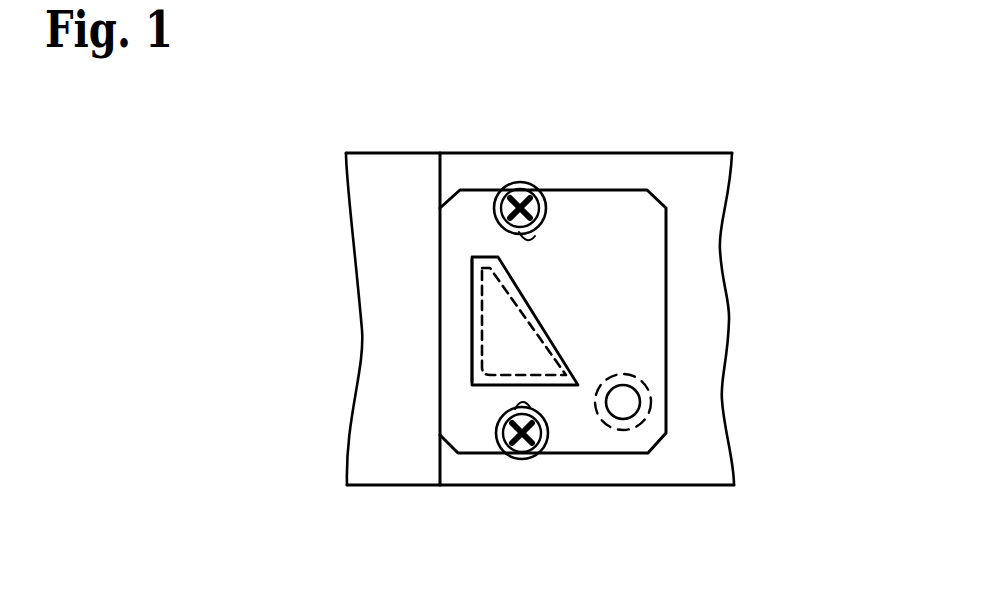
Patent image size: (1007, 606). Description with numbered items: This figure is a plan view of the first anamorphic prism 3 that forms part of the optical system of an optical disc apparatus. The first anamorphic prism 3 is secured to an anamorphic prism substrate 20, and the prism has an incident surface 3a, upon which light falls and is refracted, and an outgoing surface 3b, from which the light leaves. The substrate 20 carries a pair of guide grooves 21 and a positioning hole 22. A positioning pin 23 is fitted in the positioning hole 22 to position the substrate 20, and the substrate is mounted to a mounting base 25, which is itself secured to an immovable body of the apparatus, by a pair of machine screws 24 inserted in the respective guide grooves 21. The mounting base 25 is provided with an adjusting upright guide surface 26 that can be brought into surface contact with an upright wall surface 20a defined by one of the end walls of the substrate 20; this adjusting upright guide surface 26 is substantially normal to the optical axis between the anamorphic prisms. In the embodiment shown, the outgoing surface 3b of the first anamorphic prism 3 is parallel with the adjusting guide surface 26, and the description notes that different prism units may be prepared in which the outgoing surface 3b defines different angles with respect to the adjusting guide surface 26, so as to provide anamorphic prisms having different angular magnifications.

The first anamorphic prism 3 is at (527, 325).
The incident surface 3a is at (552, 338).
The outgoing surface 3b is at (472, 358).
The anamorphic prism substrate 20 is at (667, 252).
The upright wall surface 20a is at (440, 274).
The guide grooves 21 is at (525, 238).
The positioning hole 22 is at (612, 410).
The positioning pin 23 is at (627, 378).
The machine screws 24 is at (532, 182).
The mounting base 25 is at (707, 472).
The adjusting upright guide surface 26 is at (440, 460).